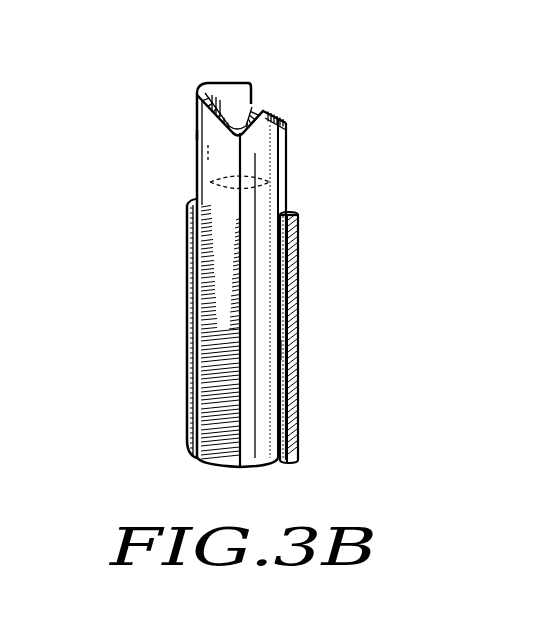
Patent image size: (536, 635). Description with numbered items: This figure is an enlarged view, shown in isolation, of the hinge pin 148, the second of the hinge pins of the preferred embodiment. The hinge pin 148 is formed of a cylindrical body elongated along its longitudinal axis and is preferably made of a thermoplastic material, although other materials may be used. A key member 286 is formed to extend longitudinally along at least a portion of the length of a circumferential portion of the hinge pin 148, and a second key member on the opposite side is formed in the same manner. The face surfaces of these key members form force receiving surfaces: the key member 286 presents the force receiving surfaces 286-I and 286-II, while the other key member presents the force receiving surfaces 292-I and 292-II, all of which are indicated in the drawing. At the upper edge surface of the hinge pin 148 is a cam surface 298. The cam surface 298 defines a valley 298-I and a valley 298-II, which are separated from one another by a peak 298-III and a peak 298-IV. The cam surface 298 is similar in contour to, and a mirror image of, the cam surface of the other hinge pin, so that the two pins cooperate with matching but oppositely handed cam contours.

The hinge pin 148 is at (240, 24).
The cam surface 298 is at (246, 75).
The valley 298-I is at (255, 94).
The valley 298-II is at (289, 128).
The peak 298-III is at (196, 133).
The peak 298-IV is at (217, 82).
The force receiving surface 292-I is at (186, 363).
The force receiving surface 292-II is at (191, 200).
The key member 286 is at (308, 287).
The force receiving surface 286-I is at (288, 348).
The force receiving surface 286-II is at (294, 213).